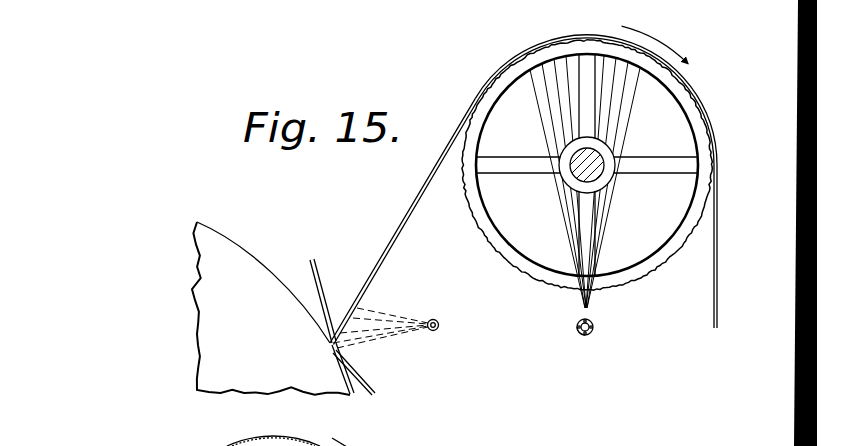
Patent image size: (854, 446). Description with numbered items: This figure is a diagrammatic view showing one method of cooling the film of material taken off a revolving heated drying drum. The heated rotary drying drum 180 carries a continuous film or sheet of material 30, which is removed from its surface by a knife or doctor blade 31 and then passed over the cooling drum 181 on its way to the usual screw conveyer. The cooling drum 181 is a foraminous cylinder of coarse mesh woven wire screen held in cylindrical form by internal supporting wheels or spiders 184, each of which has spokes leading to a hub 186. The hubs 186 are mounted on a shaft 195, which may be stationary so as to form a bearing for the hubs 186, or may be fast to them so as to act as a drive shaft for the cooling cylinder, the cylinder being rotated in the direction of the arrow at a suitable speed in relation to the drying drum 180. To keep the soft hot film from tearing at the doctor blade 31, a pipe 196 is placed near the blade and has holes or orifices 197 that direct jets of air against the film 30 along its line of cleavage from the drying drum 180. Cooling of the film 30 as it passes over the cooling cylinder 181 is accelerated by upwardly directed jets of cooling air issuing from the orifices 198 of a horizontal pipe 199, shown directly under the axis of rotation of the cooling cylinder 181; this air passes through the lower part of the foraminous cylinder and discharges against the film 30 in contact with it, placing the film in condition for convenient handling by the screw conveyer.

The continuous film or sheet of material 30 is at (405, 218).
The knife or doctor blade 31 is at (316, 272).
The heated rotary drying drum 180 is at (254, 231).
The cooling drum 181 is at (504, 268).
The internal supporting wheels or spiders 184 is at (547, 178).
The hub 186 is at (579, 173).
The shaft 195 is at (597, 177).
The pipe 196 is at (439, 327).
The holes or orifices 197 is at (424, 333).
The orifices 198 is at (590, 314).
The horizontal pipe 199 is at (582, 335).